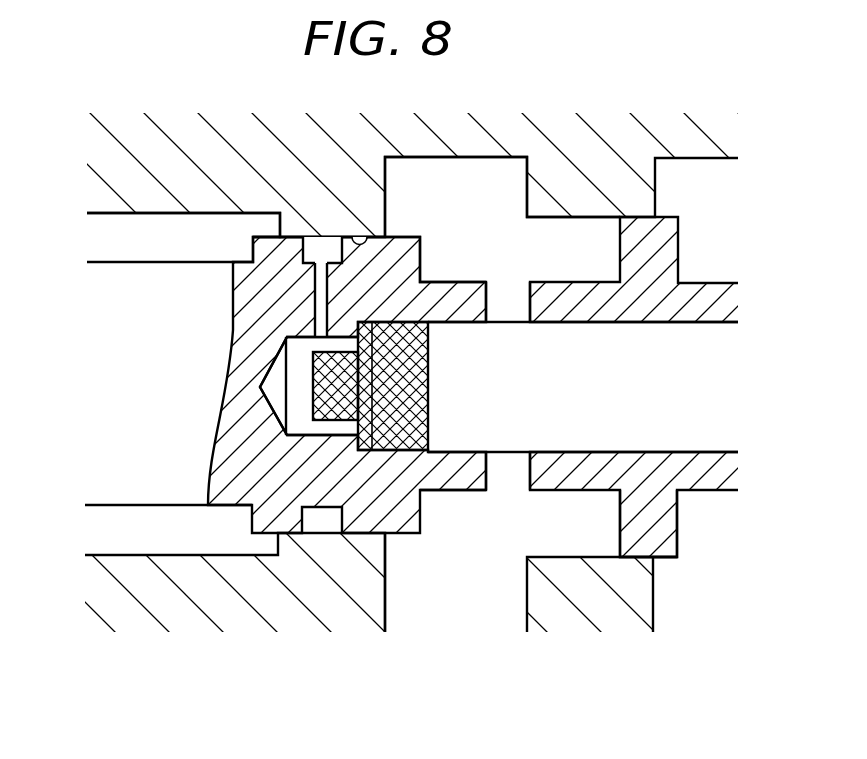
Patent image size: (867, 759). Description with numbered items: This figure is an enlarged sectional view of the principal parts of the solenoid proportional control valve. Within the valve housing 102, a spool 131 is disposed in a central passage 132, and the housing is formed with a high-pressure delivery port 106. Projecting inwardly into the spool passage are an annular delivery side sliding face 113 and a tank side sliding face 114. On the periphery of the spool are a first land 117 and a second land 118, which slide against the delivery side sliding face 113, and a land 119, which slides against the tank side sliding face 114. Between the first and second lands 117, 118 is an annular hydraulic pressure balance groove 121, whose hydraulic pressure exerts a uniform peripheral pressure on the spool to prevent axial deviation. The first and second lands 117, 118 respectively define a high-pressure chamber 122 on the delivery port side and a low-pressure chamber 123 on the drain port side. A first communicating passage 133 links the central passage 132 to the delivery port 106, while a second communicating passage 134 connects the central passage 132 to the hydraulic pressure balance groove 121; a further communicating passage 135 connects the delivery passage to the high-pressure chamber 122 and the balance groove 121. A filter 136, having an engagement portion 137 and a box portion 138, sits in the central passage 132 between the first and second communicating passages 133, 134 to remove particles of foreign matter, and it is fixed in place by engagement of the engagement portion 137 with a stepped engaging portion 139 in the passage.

The valve housing 102 is at (592, 170).
The high-pressure delivery port 106 is at (497, 572).
The delivery side sliding face 113 is at (368, 240).
The tank side sliding face 114 is at (578, 557).
The first land 117 is at (263, 518).
The second land 118 is at (403, 508).
The land 119 is at (657, 534).
The hydraulic pressure balance groove 121 is at (323, 250).
The high-pressure chamber 122 is at (502, 236).
The low-pressure chamber 123 is at (161, 254).
The spool 131 is at (140, 507).
The central passage 132 is at (706, 417).
The first communicating passage 133 is at (510, 475).
The second communicating passage 134 is at (313, 298).
The communicating passage 135 is at (266, 390).
The filter 136 is at (382, 672).
The engagement portion 137 is at (370, 452).
The box portion 138 is at (308, 437).
The stepped engaging portion 139 is at (347, 328).